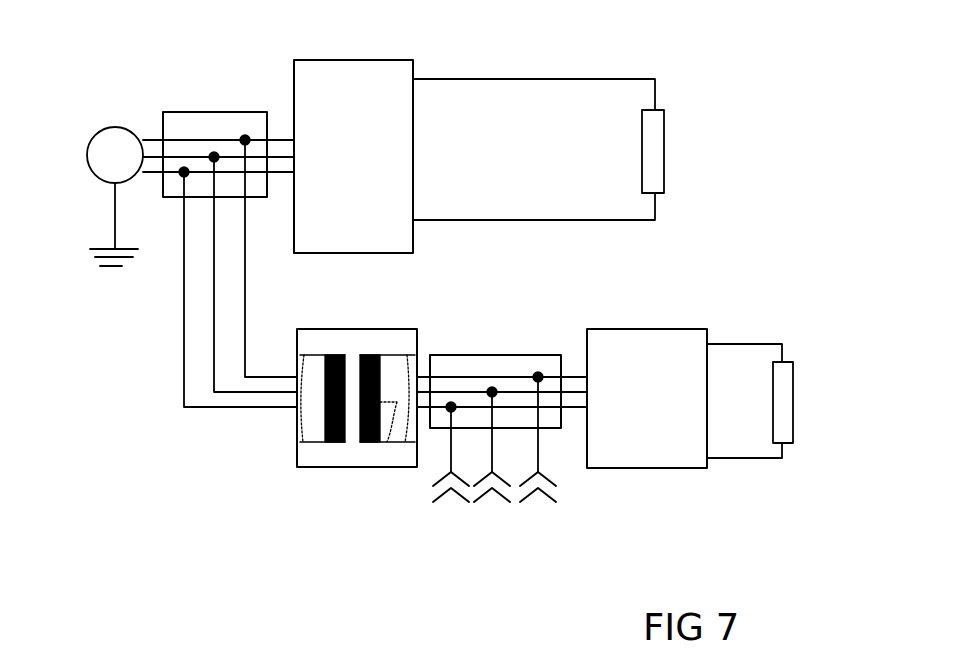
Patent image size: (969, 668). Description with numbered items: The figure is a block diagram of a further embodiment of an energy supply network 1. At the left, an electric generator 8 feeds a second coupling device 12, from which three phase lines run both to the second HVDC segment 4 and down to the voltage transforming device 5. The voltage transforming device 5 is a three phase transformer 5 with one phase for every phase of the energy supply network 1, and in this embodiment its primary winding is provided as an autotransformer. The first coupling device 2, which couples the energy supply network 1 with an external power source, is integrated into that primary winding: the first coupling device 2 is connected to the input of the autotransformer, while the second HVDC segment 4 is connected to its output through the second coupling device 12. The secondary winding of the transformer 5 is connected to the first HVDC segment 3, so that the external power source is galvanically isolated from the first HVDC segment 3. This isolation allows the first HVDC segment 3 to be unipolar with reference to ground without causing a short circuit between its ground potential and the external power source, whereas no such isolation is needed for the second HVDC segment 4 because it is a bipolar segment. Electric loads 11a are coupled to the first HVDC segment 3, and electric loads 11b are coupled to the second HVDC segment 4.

The energy supply network 1 is at (124, 451).
The first coupling device 2 is at (508, 355).
The first HVDC segment 3 is at (663, 329).
The second HVDC segment 4 is at (392, 60).
The voltage transforming device 5 is at (350, 467).
The electric generator 8 is at (95, 173).
The electric loads 11a is at (795, 395).
The electric loads 11b is at (665, 143).
The second coupling device 12 is at (210, 111).